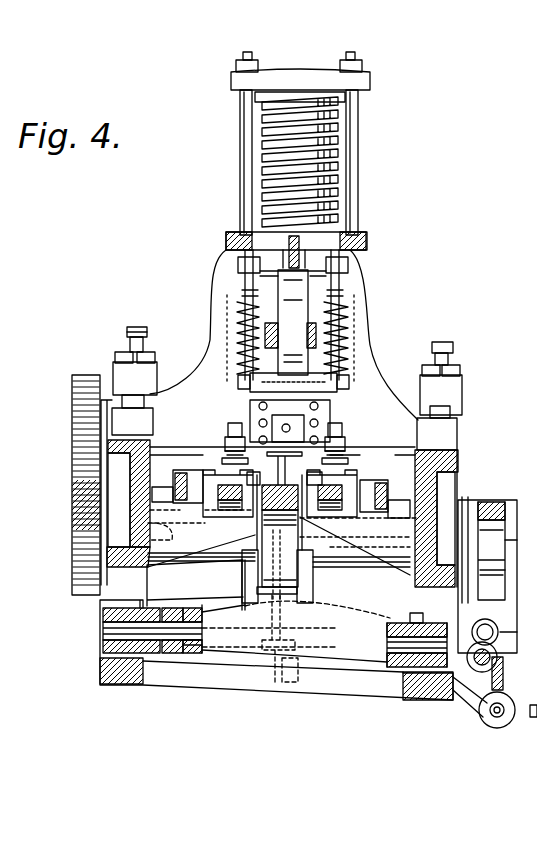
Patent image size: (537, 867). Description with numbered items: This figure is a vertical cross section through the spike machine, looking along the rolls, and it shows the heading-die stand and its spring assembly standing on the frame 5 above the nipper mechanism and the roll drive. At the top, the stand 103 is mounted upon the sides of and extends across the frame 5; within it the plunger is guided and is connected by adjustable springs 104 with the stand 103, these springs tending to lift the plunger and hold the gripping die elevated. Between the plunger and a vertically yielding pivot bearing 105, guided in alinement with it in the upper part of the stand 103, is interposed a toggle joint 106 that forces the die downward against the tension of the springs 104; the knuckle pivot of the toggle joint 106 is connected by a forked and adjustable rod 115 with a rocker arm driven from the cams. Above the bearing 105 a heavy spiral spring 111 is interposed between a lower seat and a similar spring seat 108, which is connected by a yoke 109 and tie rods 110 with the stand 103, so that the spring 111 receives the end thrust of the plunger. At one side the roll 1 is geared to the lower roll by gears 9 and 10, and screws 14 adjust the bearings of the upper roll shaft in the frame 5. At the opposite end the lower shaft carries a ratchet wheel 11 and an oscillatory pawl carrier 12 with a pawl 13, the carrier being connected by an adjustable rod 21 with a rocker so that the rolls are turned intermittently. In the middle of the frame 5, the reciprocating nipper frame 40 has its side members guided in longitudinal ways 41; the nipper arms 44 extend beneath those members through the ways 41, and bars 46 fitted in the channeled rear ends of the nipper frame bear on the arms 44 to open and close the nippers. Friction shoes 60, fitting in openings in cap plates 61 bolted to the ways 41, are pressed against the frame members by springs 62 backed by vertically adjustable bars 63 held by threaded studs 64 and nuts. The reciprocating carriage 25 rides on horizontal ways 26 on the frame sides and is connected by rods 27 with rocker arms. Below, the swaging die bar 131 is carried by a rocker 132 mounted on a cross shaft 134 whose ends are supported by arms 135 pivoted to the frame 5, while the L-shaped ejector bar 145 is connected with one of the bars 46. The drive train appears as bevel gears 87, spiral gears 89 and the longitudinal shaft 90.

The yoke 109 is at (298, 63).
The tie rods 110 is at (380, 182).
The spring seat 108 is at (362, 98).
The spiral spring 111 is at (335, 152).
The pivot bearing 105 is at (290, 283).
The toggle joint 106 is at (292, 312).
The connecting rod 115 is at (340, 343).
The stand 103 is at (244, 317).
The springs 104 is at (240, 348).
The screws 14 is at (130, 333).
The gear 9 is at (72, 393).
The gear 10 is at (70, 535).
The cap plates 61 is at (310, 472).
The threaded studs 64 is at (236, 423).
The adjustable bars 63 is at (230, 447).
The springs 62 is at (232, 455).
The friction shoes 60 is at (228, 460).
The nipper frame 40 is at (213, 470).
The bars 46 is at (222, 485).
The arms 44 is at (232, 511).
The rods 27 is at (280, 509).
The carriage 25 is at (162, 487).
The ways 26 is at (281, 509).
The frame 5 is at (278, 528).
The ways 41 is at (282, 528).
The die bar 131 is at (305, 558).
The L-shaped bar 145 is at (195, 583).
The rocker 132 is at (241, 584).
The arms 135 is at (103, 617).
The cross shaft 134 is at (195, 636).
The bevel gears 87 is at (280, 660).
The pawl 13 is at (490, 502).
The spiral gears 89 is at (503, 675).
The longitudinal shaft 90 is at (490, 712).
The roll 1 is at (533, 465).
The pawl carrier 12 is at (510, 542).
The ratchet wheel 11 is at (505, 572).
The adjustable rod 21 is at (505, 632).